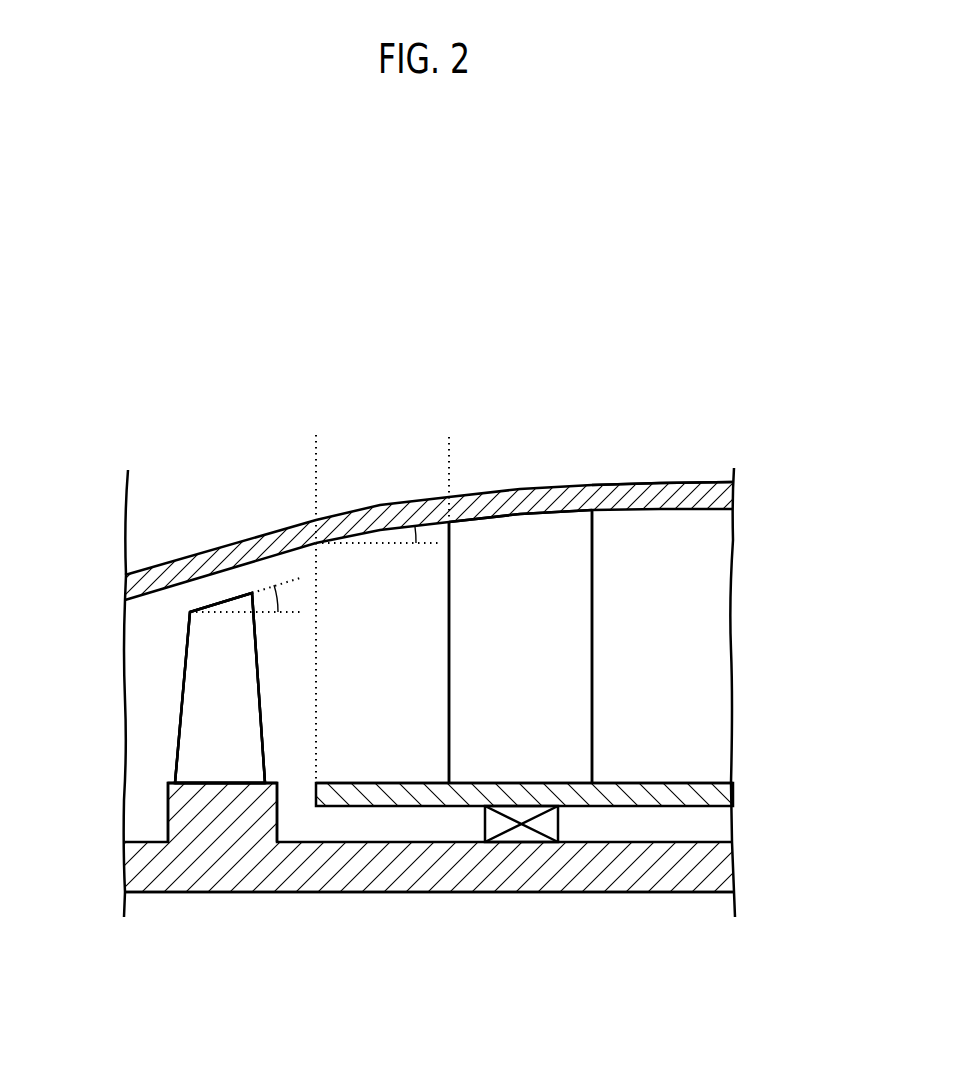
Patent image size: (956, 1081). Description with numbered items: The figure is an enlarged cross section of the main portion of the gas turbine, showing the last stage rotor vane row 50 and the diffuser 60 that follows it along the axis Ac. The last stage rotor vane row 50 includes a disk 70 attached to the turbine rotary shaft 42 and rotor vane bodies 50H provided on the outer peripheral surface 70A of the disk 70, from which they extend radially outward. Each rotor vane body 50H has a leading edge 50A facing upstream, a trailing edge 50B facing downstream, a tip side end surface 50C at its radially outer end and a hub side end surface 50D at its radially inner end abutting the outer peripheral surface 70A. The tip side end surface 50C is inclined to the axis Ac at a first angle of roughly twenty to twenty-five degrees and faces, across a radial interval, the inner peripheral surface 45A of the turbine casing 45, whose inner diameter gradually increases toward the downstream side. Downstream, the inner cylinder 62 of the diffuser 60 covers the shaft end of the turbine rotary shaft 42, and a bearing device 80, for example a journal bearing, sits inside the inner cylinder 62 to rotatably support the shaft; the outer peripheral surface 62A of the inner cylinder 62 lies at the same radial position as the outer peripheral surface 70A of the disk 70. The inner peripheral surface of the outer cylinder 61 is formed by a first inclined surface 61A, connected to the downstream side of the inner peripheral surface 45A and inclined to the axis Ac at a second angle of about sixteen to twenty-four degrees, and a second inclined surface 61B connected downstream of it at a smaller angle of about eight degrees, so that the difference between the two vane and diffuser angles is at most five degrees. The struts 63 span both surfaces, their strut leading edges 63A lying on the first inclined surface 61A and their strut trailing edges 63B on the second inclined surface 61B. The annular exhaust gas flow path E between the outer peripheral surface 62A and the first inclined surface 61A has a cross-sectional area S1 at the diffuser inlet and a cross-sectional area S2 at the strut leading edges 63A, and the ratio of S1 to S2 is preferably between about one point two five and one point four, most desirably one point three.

The turbine rotary shaft 42 is at (437, 867).
The turbine casing 45 is at (200, 552).
The inner peripheral surface 45A is at (167, 603).
The last stage rotor vane row 50 is at (158, 715).
The leading edge 50A is at (193, 632).
The trailing edge 50B is at (256, 658).
The tip side end surface 50C is at (237, 592).
The hub side end surface 50D is at (262, 783).
The rotor vane body 50H is at (202, 675).
The diffuser 60 is at (732, 416).
The outer cylinder 61 is at (346, 517).
The first inclined surface 61A is at (487, 540).
The second inclined surface 61B is at (670, 525).
The inner cylinder 62 is at (640, 795).
The outer peripheral surface 62A is at (688, 782).
The strut 63 is at (563, 535).
The strut leading edge 63A is at (446, 697).
The strut trailing edge 63B is at (594, 578).
The disk 70 is at (183, 818).
The outer peripheral surface 70A is at (207, 765).
The bearing device 80 is at (530, 835).
The axis Ac is at (148, 893).
The exhaust gas flow path E is at (692, 645).
The cross-sectional area at diffuser inlet S1 is at (311, 592).
The cross-sectional area at strut leading edges S2 is at (449, 462).